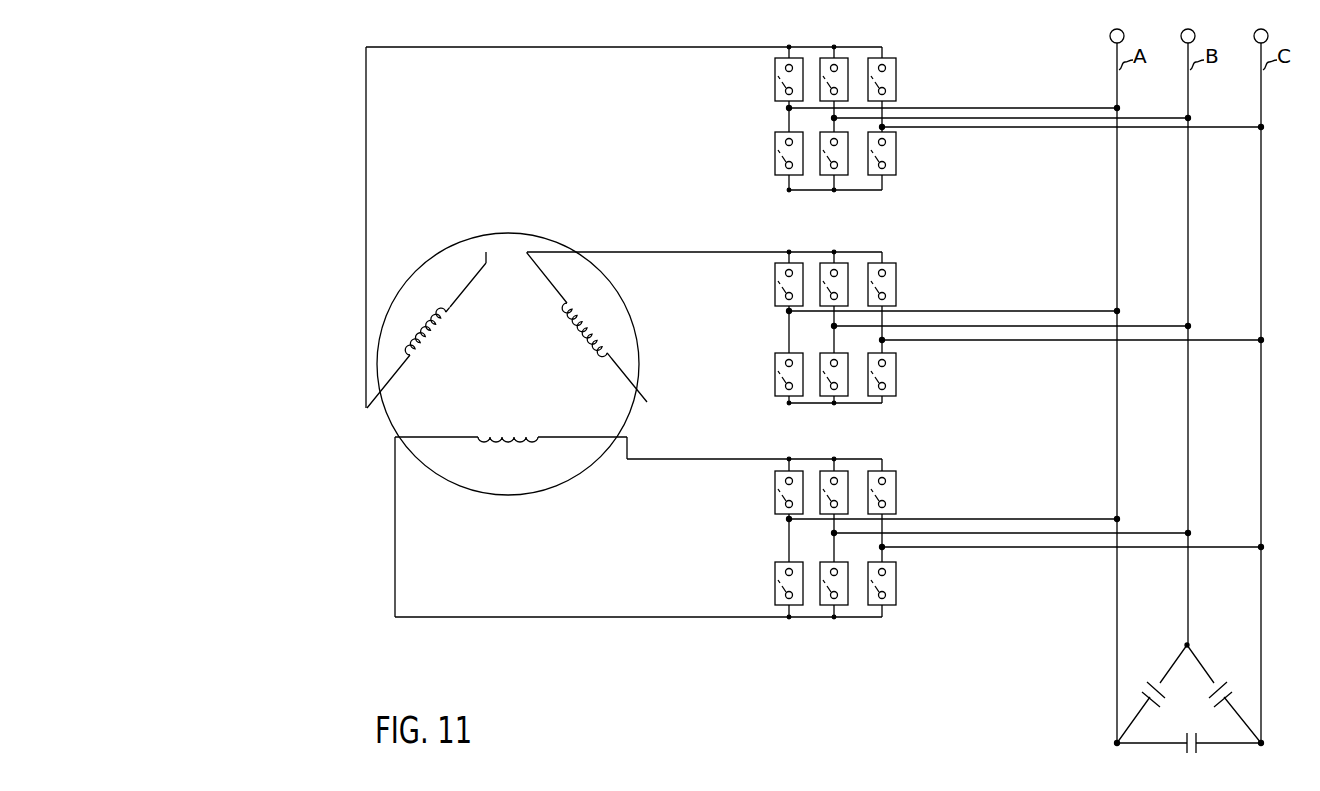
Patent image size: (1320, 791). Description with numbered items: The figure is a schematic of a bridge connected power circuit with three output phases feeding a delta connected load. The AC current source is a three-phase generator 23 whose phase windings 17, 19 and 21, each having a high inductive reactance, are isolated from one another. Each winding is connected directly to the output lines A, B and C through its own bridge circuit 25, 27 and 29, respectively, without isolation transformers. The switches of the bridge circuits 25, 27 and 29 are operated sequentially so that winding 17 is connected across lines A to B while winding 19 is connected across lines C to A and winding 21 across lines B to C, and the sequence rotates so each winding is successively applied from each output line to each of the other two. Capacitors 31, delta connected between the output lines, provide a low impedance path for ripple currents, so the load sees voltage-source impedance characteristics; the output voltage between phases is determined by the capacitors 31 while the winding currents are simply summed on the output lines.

The phase winding 17 is at (438, 302).
The phase winding 19 is at (608, 306).
The phase winding 21 is at (503, 447).
The 3-phase generator 23 is at (562, 244).
The bridge circuit 25 is at (948, 92).
The bridge circuit 27 is at (948, 296).
The bridge circuit 29 is at (955, 497).
The capacitors 31 is at (1163, 686).